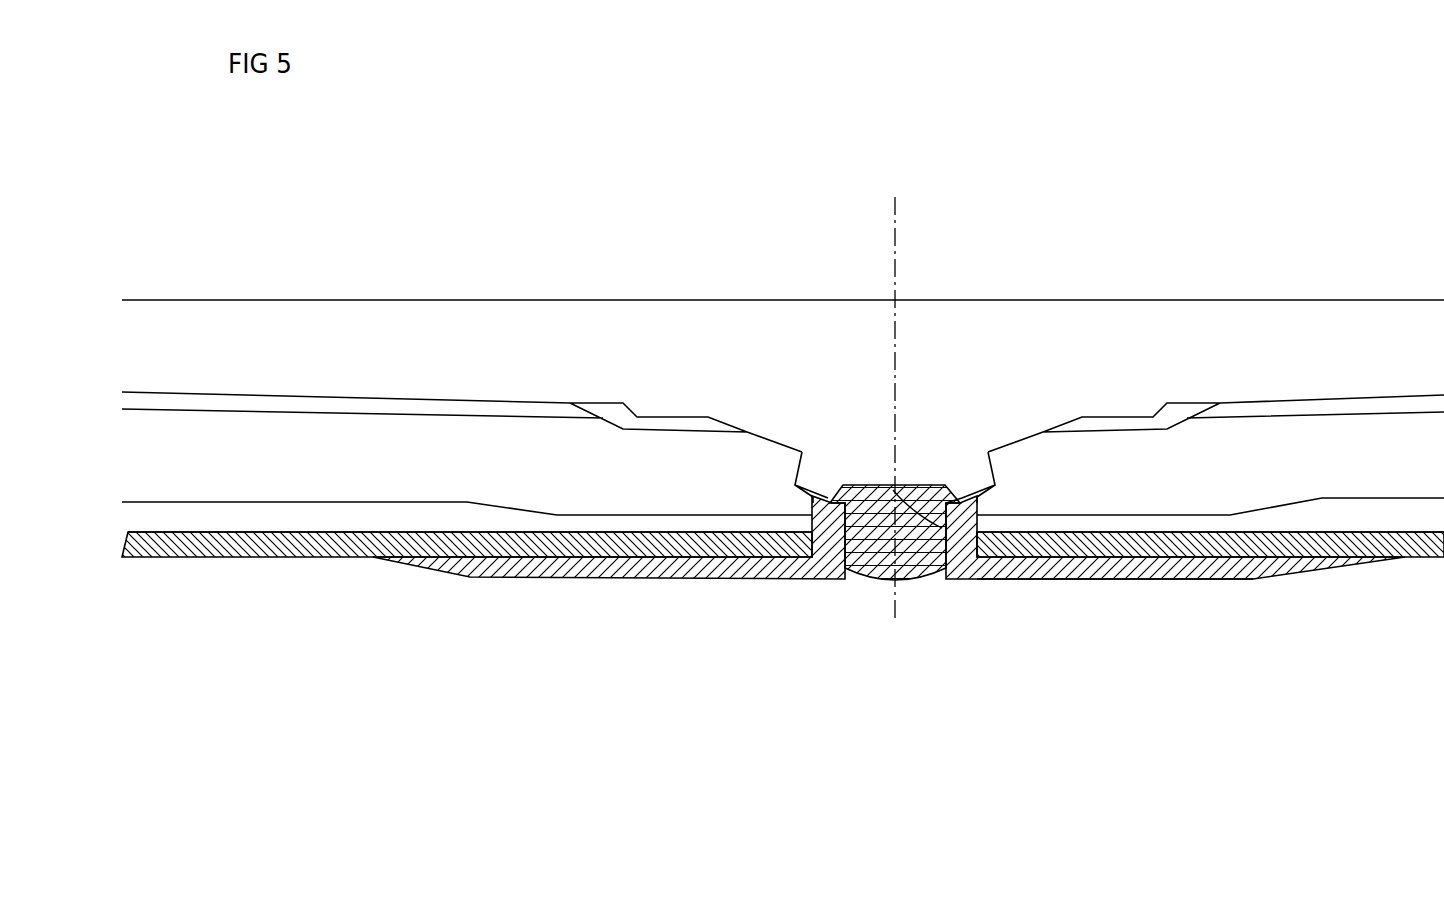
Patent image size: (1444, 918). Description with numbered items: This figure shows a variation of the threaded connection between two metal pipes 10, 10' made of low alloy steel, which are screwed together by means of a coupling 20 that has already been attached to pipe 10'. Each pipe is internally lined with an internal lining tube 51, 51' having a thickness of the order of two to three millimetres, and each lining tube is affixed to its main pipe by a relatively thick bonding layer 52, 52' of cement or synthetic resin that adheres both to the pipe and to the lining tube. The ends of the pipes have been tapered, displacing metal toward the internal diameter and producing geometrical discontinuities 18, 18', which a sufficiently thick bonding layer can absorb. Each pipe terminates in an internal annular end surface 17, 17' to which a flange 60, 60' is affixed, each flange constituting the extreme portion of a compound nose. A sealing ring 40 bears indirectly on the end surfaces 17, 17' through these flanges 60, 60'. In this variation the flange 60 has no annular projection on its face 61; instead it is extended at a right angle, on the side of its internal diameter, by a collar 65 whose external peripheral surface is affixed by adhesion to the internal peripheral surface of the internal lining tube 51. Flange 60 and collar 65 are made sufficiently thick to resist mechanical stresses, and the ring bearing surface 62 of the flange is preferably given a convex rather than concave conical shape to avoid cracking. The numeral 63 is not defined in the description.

The coupling 20 is at (538, 340).
The internal annular end surface 17' is at (475, 331).
The internal annular end surface 17 is at (1091, 335).
The face 61 is at (1000, 517).
The ring bearing surface 62 is at (893, 490).
The contact tip 63 is at (968, 497).
The sealing ring 40 is at (882, 570).
The flange 60' is at (609, 613).
The flange 60 is at (1175, 613).
The collar 65 is at (1075, 578).
The internal lining tube 51' is at (467, 631).
The internal lining tube 51 is at (1210, 631).
The bonding layer 52' is at (470, 625).
The bonding layer 52 is at (1210, 623).
The geometrical discontinuity 18' is at (679, 620).
The geometrical discontinuity 18 is at (1115, 620).
The metal pipe 10' is at (339, 597).
The metal pipe 10 is at (1337, 593).